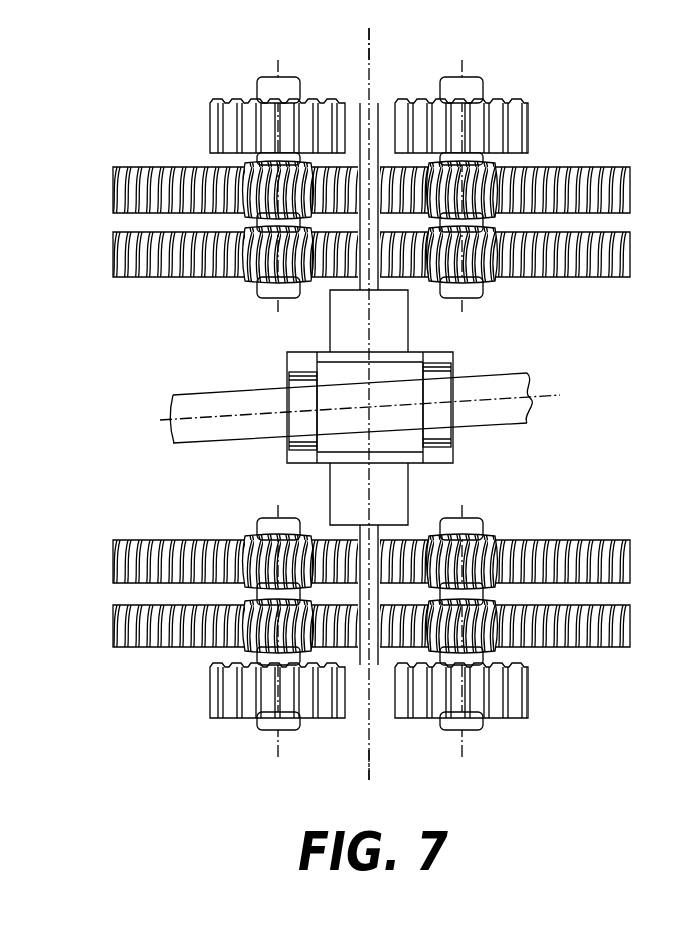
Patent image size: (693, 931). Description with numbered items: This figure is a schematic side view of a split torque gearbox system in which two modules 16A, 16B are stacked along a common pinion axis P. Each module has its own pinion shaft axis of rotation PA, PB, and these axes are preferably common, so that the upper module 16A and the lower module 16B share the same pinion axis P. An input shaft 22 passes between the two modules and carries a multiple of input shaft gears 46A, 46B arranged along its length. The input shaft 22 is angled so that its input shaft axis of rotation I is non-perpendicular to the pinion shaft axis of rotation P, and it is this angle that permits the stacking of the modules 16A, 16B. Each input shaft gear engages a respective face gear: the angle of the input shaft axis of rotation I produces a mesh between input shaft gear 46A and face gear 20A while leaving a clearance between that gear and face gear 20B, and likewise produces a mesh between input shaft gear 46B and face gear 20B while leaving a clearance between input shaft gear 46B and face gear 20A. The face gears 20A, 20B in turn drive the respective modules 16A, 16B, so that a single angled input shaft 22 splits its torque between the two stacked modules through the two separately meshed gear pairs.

The module 16A is at (548, 118).
The module 16B is at (548, 682).
The pinion shaft axis of rotation P is at (368, 327).
The pinion shaft axis of rotation PA is at (369, 41).
The pinion shaft axis of rotation PB is at (369, 768).
The face gear 20A is at (447, 360).
The face gear 20B is at (300, 457).
The input shaft 22 is at (512, 427).
The input shaft gear 46A is at (443, 387).
The input shaft gear 46B is at (297, 433).
The input shaft axis of rotation I is at (548, 397).